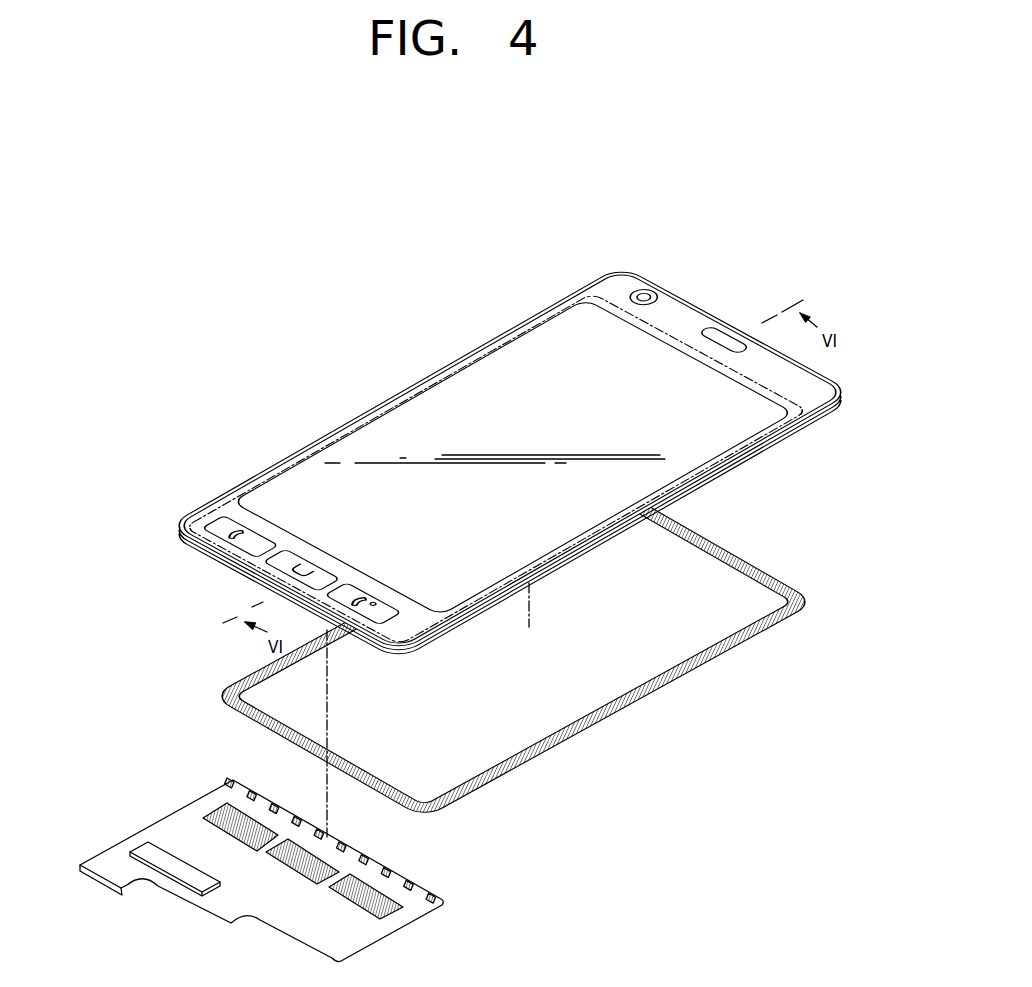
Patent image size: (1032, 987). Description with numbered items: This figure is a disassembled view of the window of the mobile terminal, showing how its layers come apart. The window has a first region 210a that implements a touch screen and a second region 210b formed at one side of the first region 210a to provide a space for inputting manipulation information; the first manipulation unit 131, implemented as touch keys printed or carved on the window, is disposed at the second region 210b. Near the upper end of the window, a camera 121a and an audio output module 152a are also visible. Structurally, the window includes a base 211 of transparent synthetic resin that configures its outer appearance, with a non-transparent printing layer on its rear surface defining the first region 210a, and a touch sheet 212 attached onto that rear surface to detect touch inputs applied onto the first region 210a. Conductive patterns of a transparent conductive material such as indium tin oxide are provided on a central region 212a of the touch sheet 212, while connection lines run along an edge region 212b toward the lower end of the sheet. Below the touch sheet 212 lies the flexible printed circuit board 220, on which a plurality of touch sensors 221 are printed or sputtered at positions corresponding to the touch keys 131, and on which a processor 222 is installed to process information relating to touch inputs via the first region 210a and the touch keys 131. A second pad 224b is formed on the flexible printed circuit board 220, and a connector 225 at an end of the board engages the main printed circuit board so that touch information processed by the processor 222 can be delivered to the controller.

The camera 121a is at (652, 294).
The audio output module (receiver) 152a is at (727, 340).
The first manipulation unit 131 is at (227, 525).
The first region 210a is at (387, 405).
The second region 210b is at (188, 512).
The base 211 is at (440, 378).
The touch sheet 212 is at (515, 650).
The central region 212a is at (648, 673).
The edge region 212b is at (718, 662).
The flexible printed circuit board 220 is at (275, 862).
The touch sensors 221 is at (390, 913).
The processor 222 is at (195, 880).
The second pad 224b is at (432, 900).
The connector 225 is at (103, 880).